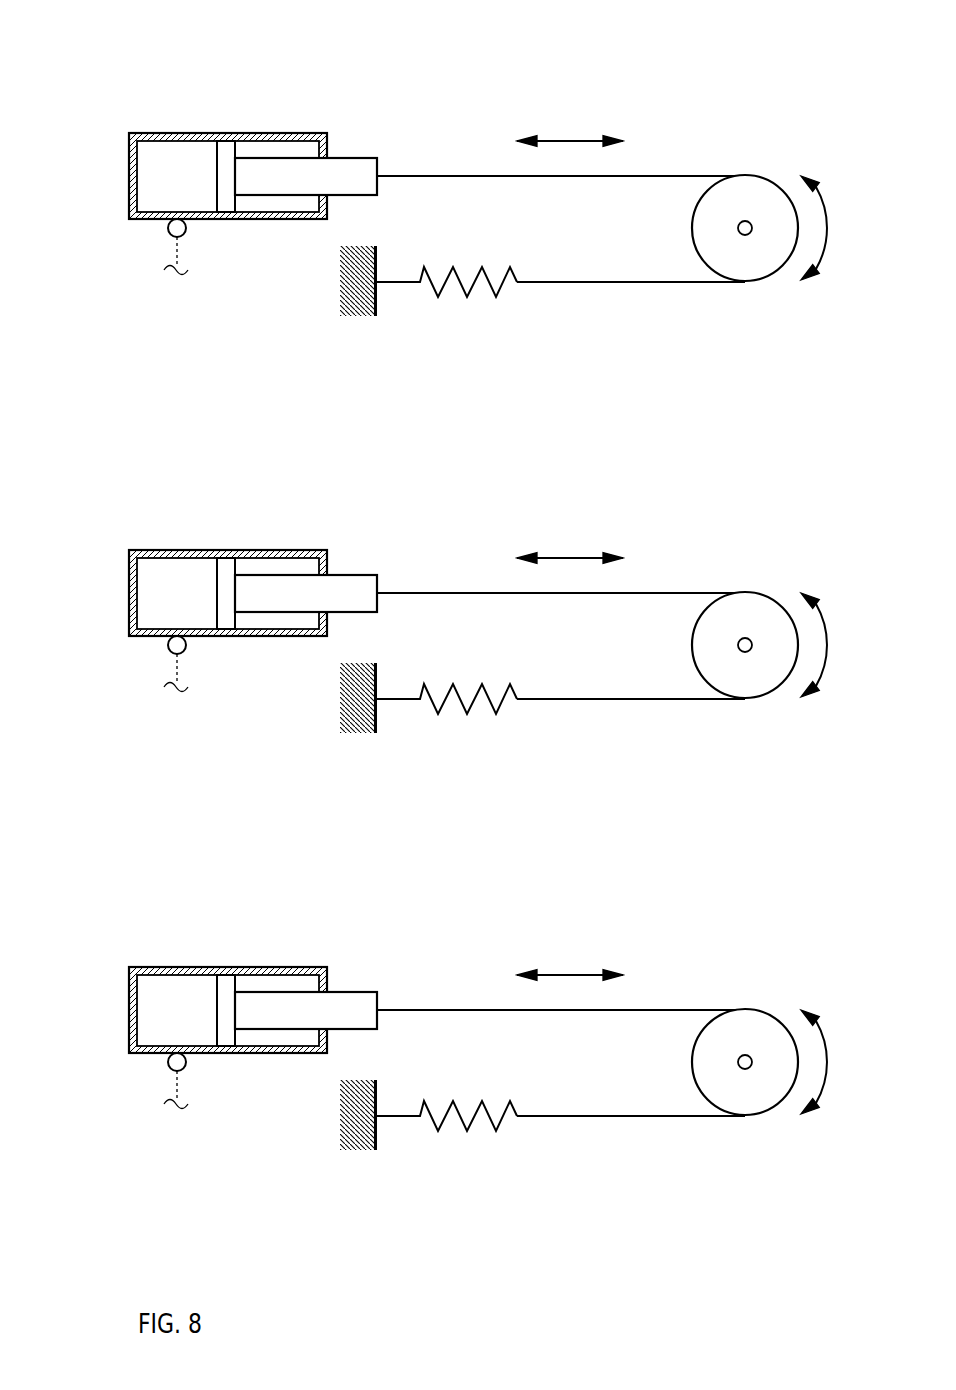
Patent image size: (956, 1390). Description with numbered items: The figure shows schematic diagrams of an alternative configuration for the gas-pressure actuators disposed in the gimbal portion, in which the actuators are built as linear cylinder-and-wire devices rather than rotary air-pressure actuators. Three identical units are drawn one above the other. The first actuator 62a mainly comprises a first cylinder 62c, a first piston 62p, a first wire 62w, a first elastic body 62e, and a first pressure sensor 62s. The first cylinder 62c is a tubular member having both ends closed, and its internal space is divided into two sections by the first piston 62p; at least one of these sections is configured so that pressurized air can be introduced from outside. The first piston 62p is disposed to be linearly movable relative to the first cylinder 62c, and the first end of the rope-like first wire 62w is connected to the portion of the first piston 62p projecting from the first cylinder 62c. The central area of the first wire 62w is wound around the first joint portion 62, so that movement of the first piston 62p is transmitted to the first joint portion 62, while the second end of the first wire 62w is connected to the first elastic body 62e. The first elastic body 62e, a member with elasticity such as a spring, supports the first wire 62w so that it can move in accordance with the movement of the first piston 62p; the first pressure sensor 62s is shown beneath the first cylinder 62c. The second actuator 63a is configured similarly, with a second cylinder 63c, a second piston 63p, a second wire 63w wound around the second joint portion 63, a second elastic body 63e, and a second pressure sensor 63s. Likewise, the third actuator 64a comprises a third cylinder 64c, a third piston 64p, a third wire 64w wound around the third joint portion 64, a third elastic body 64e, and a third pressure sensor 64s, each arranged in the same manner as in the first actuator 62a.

The first joint portion 62 is at (692, 228).
The first actuator 62a is at (130, 76).
The first cylinder 62c is at (196, 133).
The first piston 62p is at (349, 157).
The first pressure sensor 62s is at (166, 228).
The first wire 62w is at (680, 174).
The first elastic body 62e is at (466, 294).
The second joint portion 63 is at (716, 645).
The second actuator 63a is at (447, 601).
The second cylinder 63c is at (228, 555).
The second piston 63p is at (311, 543).
The second pressure sensor 63s is at (128, 664).
The second wire 63w is at (561, 613).
The second elastic body 63e is at (446, 731).
The third joint portion 64 is at (716, 1062).
The third actuator 64a is at (447, 1018).
The third cylinder 64c is at (228, 972).
The third piston 64p is at (311, 960).
The third pressure sensor 64s is at (128, 1081).
The third wire 64w is at (561, 1030).
The third elastic body 64e is at (446, 1148).